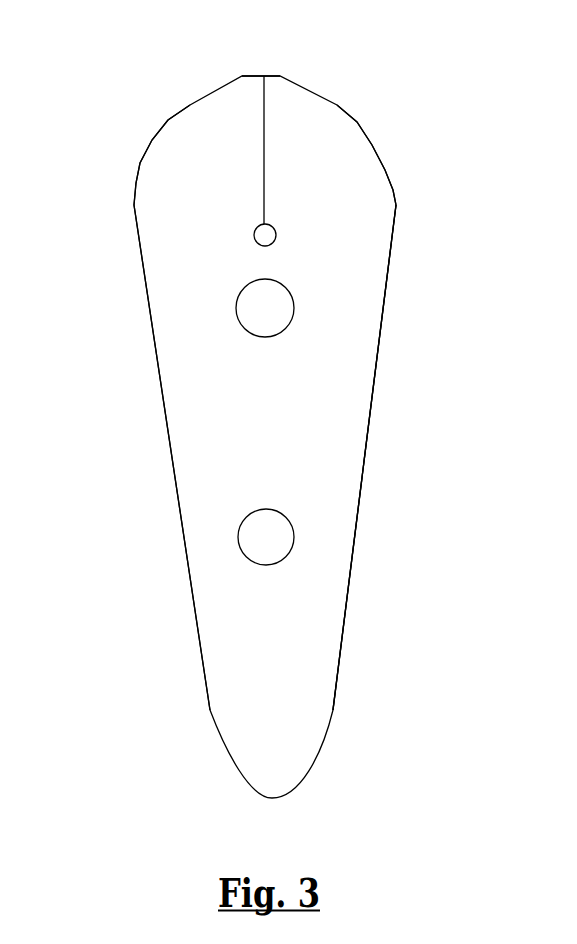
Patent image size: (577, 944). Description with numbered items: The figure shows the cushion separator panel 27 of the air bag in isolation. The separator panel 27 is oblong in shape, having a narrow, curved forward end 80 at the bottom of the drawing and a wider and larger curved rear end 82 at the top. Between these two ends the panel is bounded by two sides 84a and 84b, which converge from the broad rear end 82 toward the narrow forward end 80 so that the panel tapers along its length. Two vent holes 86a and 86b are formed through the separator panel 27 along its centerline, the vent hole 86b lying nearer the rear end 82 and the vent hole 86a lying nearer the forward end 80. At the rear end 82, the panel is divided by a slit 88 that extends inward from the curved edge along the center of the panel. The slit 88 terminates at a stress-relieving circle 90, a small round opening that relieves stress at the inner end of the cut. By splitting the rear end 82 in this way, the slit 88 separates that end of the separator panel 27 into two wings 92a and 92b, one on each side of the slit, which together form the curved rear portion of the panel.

The forward end 80 is at (280, 748).
The rear end 82 is at (330, 117).
The slit 88 is at (263, 155).
The stress-relieving circle 90 is at (257, 238).
The wing 92a is at (360, 197).
The wing 92b is at (172, 163).
The side 84a is at (332, 532).
The side 84b is at (202, 418).
The separator panel 27 is at (340, 427).
The vent hole 86a is at (266, 555).
The vent hole 86b is at (273, 325).